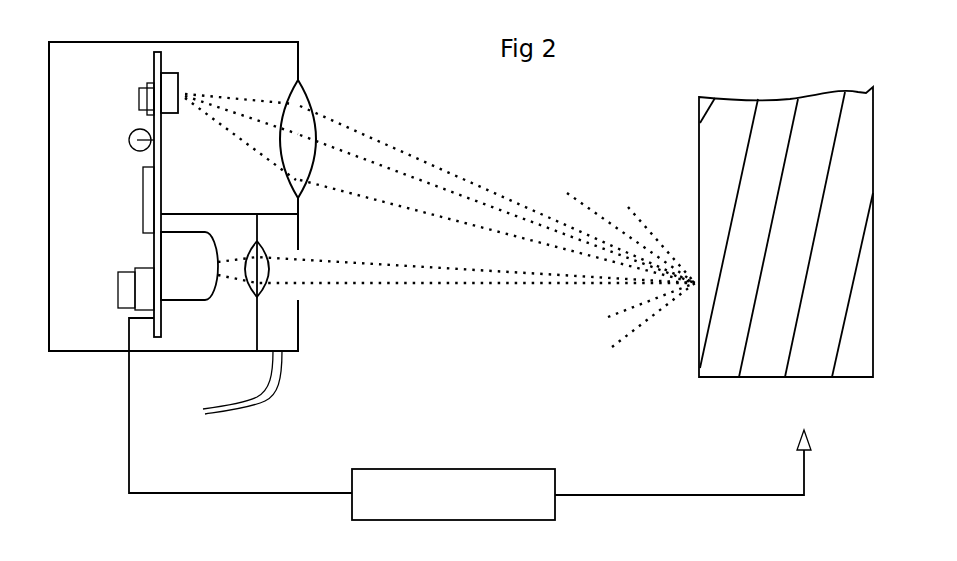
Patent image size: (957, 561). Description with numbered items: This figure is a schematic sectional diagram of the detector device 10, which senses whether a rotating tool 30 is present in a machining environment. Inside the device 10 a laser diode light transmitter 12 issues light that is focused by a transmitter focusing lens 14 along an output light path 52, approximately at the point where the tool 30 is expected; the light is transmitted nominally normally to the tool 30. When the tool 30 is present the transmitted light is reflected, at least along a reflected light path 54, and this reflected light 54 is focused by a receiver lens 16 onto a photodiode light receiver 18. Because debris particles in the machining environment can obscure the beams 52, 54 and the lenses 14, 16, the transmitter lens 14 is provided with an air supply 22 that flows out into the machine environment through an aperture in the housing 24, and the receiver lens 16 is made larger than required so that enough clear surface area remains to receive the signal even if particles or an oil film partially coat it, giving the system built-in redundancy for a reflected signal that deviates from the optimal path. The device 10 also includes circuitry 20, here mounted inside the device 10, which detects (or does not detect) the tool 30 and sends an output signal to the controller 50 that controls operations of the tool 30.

The detector device 10 is at (285, 41).
The laser diode light transmitter 12 is at (187, 282).
The transmitter focusing lens 14 is at (258, 272).
The receiver lens 16 is at (295, 105).
The photodiode light receiver 18 is at (178, 100).
The circuitry 20 is at (131, 212).
The air supply 22 is at (200, 410).
The housing 24 is at (298, 272).
The tool 30 is at (786, 212).
The controller 50 is at (442, 469).
The output light path 52 is at (445, 268).
The reflected light path 54 is at (412, 182).